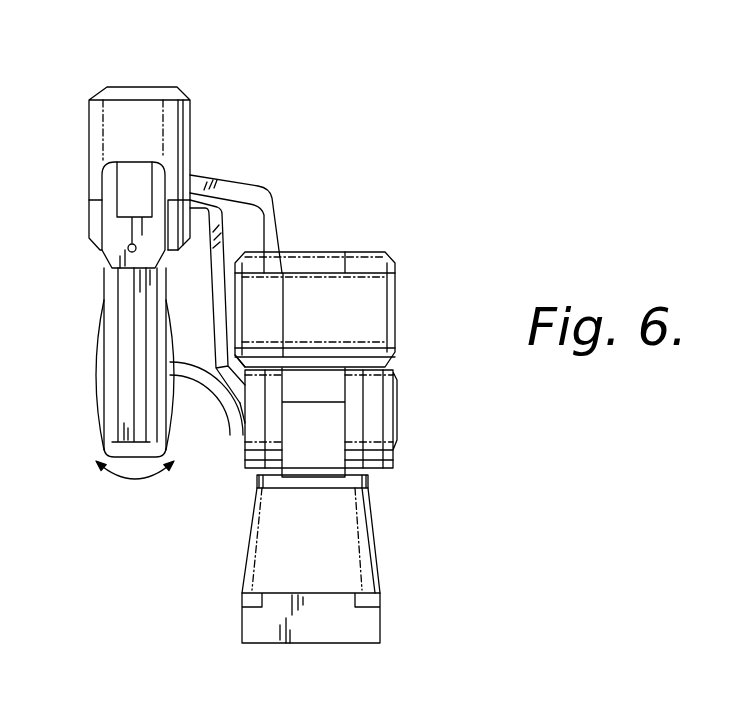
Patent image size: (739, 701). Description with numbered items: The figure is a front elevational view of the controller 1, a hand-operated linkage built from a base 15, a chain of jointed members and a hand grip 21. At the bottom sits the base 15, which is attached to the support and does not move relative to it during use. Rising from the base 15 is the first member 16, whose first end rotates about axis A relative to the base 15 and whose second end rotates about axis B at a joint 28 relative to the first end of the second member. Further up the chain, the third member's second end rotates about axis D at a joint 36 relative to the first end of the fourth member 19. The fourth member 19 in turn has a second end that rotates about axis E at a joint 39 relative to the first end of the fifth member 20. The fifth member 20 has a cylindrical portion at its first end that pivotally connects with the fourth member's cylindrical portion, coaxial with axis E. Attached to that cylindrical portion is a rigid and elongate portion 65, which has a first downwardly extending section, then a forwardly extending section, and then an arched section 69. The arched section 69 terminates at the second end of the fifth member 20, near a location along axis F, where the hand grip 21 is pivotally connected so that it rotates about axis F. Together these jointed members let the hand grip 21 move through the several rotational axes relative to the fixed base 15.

The controller 1 is at (465, 449).
The base 15 is at (382, 626).
The first member 16 is at (382, 528).
The fourth member 19 is at (238, 183).
The fifth member 20 is at (223, 427).
The hand grip 21 is at (104, 278).
The joint 28 is at (397, 412).
The joint 36 is at (396, 304).
The joint 39 is at (130, 88).
The rigid and elongate portion 65 is at (208, 258).
The arched section 69 is at (196, 406).